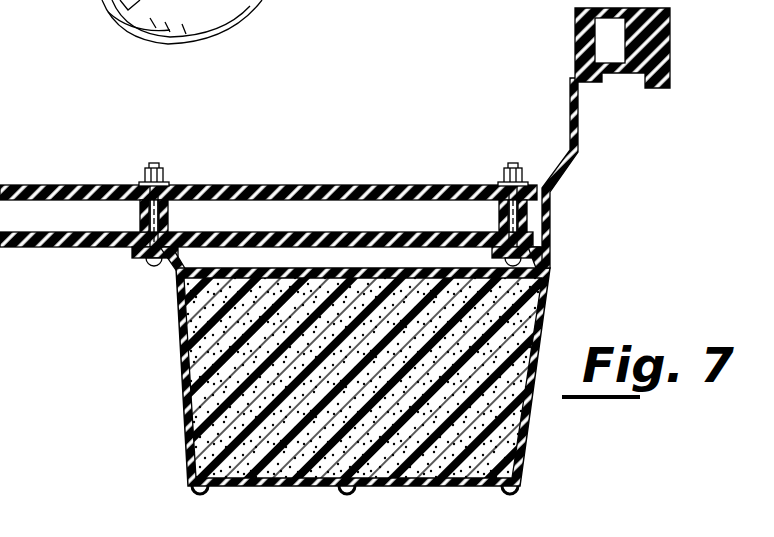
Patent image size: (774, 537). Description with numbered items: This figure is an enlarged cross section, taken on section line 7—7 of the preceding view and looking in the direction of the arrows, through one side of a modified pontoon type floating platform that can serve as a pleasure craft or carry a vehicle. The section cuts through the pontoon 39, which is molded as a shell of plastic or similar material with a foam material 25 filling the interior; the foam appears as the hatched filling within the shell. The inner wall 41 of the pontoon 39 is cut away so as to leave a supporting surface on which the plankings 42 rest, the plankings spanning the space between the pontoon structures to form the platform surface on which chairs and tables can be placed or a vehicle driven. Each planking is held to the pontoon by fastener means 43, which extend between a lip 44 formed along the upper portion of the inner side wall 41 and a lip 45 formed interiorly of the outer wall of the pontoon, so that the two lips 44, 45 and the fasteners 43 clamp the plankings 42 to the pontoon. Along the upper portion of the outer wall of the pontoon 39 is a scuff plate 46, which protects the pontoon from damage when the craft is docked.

The partial view of adjacent figure element 7 is at (290, 0).
The plankings 42 is at (33, 186).
The fastener means 43 is at (165, 184).
The lip 44 is at (138, 256).
The inner wall 41 is at (176, 290).
The lip 45 is at (498, 262).
The foam material 25 is at (182, 346).
The pontoon 39 is at (545, 302).
The scuff plate 46 is at (672, 40).